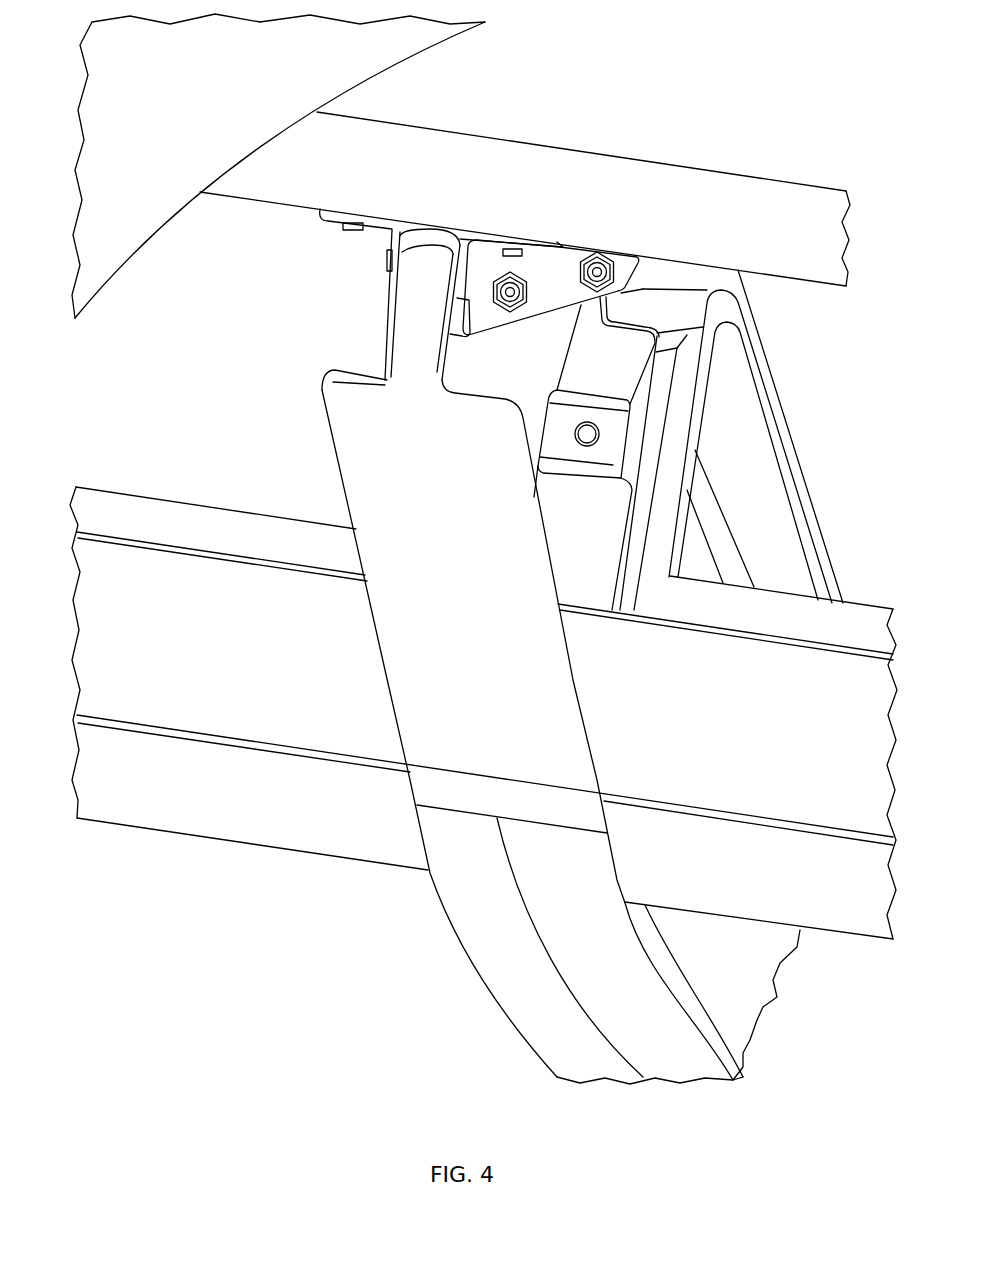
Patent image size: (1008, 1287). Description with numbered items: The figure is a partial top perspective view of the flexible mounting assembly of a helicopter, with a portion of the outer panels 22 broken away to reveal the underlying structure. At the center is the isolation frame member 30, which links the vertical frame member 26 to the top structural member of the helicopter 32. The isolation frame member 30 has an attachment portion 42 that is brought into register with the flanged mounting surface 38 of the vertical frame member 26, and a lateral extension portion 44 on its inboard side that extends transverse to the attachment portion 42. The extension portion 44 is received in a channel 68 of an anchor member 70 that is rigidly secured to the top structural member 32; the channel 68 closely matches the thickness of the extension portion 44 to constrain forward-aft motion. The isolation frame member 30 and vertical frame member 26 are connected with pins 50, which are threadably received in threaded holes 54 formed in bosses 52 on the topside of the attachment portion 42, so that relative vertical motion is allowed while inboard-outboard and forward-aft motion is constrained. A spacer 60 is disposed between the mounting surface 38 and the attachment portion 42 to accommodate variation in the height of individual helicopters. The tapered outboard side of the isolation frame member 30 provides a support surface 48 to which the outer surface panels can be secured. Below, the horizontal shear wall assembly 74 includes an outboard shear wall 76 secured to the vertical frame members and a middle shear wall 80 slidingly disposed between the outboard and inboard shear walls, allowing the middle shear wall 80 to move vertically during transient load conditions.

The outer panels 22 is at (166, 108).
The vertical frame member 26 is at (803, 525).
The isolation frame member 30 is at (326, 315).
The top structural member of the helicopter 32 is at (670, 230).
The flanged mounting surface 38 is at (689, 488).
The attachment portion 42 is at (627, 543).
The lateral extension portion 44 is at (533, 350).
The support surface 48 is at (326, 420).
The pins 50 is at (600, 437).
The bosses 52 is at (598, 403).
The threaded holes 54 is at (594, 421).
The spacer 60 is at (620, 337).
The channel 68 is at (438, 229).
The anchor member 70 is at (492, 242).
The horizontal shear wall assembly 74 is at (134, 522).
The outboard shear wall 76 is at (337, 826).
The middle shear wall 80 is at (192, 665).